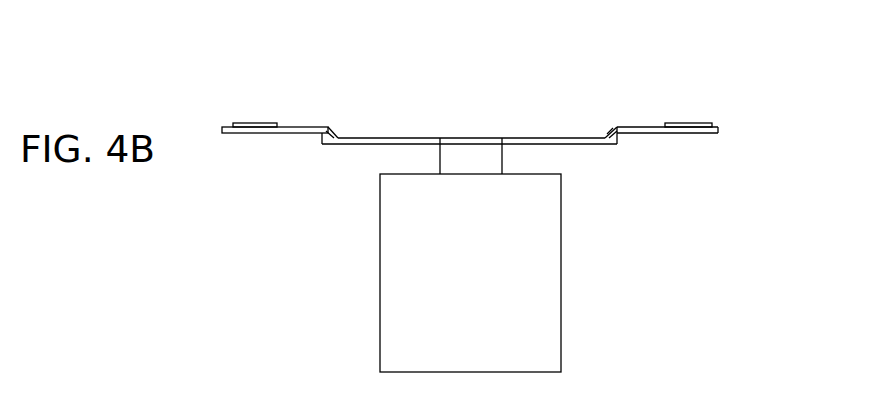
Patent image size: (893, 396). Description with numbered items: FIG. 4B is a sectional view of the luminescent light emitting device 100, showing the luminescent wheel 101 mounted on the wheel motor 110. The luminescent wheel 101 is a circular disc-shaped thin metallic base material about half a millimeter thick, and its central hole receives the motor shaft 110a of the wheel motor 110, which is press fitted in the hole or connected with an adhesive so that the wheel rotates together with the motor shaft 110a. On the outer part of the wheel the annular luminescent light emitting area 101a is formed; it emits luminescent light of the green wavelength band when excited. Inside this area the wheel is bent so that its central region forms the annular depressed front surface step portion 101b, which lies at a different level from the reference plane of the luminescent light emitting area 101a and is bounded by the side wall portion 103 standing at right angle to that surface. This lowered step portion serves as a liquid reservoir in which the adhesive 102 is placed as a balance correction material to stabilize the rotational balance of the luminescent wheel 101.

The light emitting device 100 is at (282, 95).
The luminescent wheel 101 is at (718, 127).
The luminescent light emitting area 101a is at (687, 123).
The front surface step portion 101b is at (540, 137).
The adhesive 102 is at (608, 131).
The side wall portion 103 is at (613, 131).
The wheel motor 110 is at (566, 278).
The motor shaft 110a is at (498, 153).